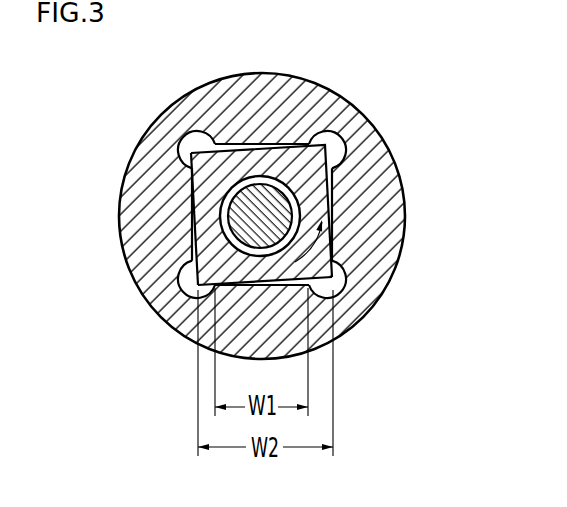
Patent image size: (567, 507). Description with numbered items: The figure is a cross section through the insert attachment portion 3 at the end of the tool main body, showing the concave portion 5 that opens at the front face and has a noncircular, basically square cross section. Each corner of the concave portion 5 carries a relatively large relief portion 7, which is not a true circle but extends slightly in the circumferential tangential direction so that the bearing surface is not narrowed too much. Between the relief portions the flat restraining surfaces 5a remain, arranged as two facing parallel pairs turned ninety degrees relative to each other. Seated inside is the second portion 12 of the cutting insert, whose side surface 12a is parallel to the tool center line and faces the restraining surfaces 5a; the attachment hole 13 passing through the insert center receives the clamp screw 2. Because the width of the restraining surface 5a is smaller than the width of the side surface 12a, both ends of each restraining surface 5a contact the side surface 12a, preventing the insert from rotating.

The clamp screw 2 is at (195, 249).
The insert attachment portion 3 is at (407, 238).
The concave portion 5 is at (335, 165).
The restraining surface 5a is at (199, 133).
The relief portion 7 is at (189, 296).
The second portion 12 is at (210, 187).
The side surface 12a is at (257, 148).
The attachment hole 13 is at (242, 231).